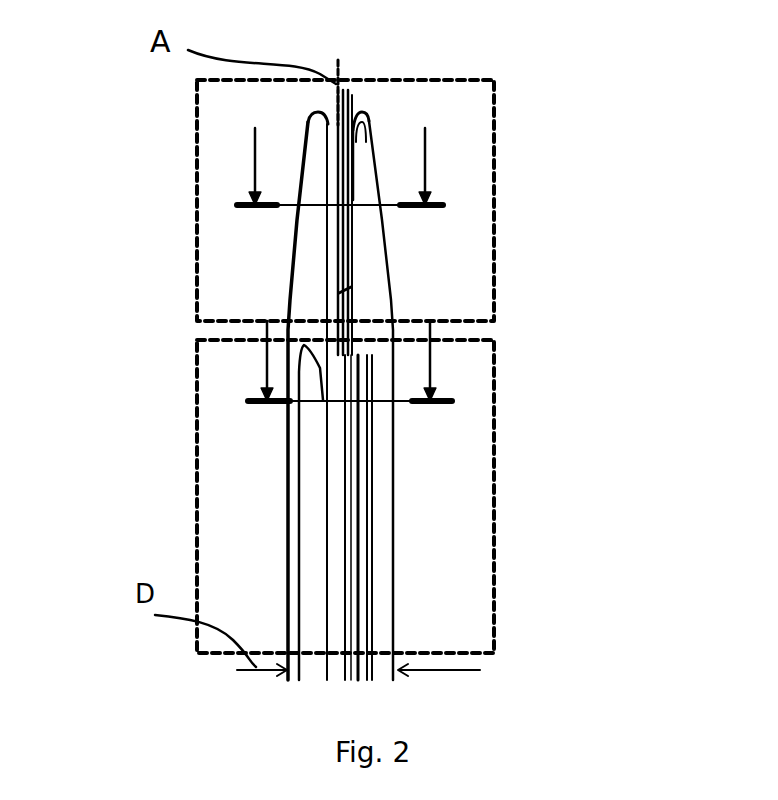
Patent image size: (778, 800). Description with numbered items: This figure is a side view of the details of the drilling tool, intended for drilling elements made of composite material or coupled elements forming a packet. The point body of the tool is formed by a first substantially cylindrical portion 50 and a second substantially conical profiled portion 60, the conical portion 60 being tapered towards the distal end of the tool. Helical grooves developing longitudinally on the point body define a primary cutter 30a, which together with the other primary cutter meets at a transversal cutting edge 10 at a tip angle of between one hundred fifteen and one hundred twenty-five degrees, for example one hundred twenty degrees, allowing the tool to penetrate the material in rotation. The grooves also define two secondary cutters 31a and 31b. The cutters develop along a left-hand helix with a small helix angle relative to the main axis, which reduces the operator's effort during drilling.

The transversal cutting edge 10 is at (340, 108).
The second substantially conical profiled portion 60 is at (495, 173).
The first substantially cylindrical portion 50 is at (495, 472).
The secondary cutter 31a is at (390, 263).
The secondary cutter 31b is at (282, 248).
The primary cutter 30a is at (368, 575).